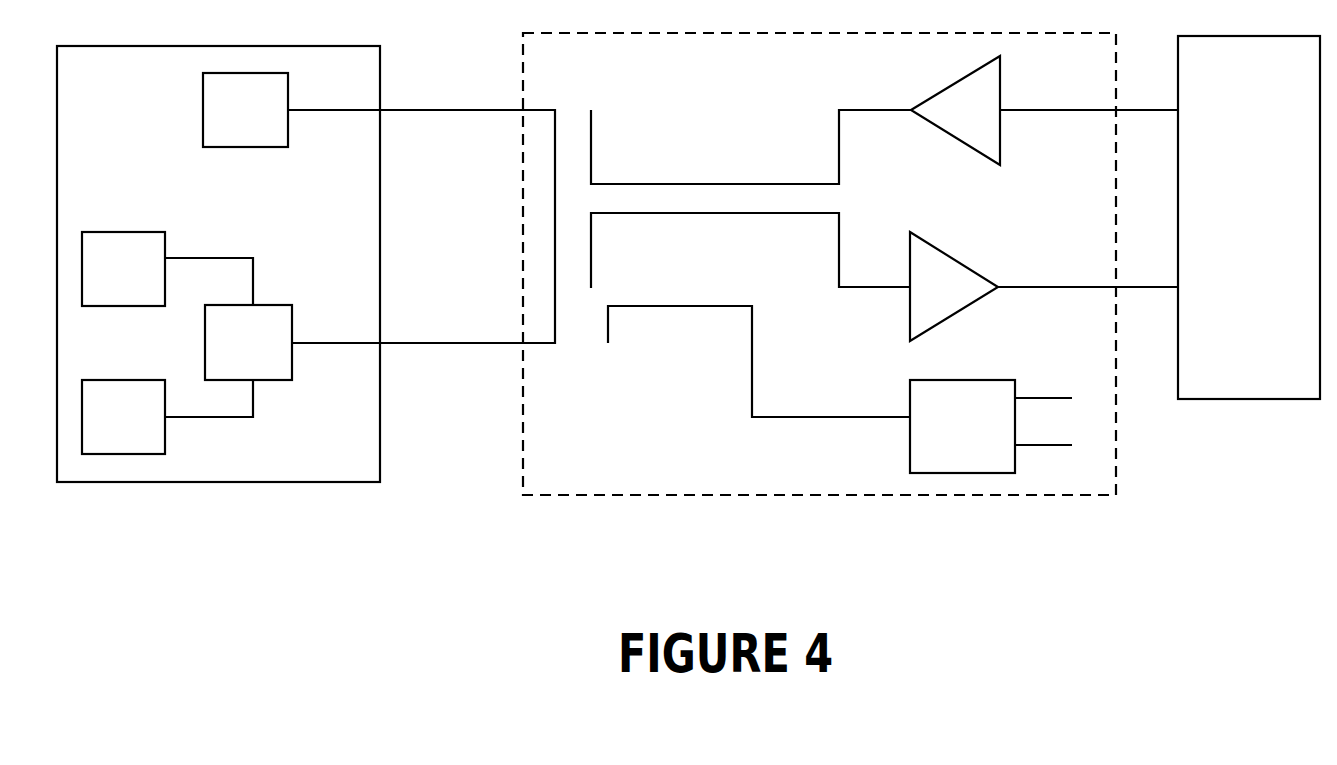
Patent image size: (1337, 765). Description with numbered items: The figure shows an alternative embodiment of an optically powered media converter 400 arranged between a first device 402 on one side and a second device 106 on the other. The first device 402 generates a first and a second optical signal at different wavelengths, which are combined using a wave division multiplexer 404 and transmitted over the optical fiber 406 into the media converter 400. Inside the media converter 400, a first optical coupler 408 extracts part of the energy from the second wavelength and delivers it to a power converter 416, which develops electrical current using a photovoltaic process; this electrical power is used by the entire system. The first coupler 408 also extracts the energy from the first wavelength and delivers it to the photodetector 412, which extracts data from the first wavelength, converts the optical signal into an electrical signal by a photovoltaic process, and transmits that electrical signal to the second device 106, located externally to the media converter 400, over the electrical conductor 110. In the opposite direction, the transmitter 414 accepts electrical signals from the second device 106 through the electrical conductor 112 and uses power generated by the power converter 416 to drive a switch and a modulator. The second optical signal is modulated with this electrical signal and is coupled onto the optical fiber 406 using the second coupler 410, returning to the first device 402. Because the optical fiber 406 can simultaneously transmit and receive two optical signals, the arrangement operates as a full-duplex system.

The second device 106 is at (1249, 217).
The electrical conductor 110 is at (1030, 287).
The electrical conductor 112 is at (1042, 110).
The optically powered media converter 400 is at (819, 264).
The first device 402 is at (218, 264).
The wave division multiplexer 404 is at (248, 342).
The optical fiber 406 is at (463, 345).
The first optical coupler 408 is at (593, 262).
The second optical coupler 410 is at (593, 122).
The photodetector 412 is at (958, 257).
The transmitter 414 is at (943, 88).
The power converter 416 is at (851, 389).